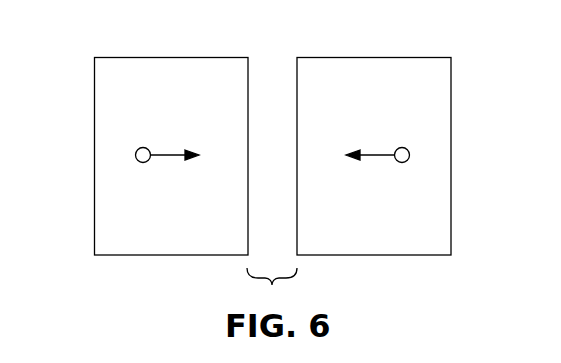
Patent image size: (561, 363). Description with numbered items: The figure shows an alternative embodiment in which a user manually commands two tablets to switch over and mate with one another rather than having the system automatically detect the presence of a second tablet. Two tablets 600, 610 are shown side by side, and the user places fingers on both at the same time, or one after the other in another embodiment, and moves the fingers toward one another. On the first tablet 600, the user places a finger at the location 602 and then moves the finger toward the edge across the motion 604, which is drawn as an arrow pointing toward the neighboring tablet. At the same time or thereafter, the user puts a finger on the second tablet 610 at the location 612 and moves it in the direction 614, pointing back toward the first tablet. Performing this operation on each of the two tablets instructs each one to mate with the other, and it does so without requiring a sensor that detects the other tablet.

The tablet 600 is at (118, 57).
The finger placement location 602 is at (136, 155).
The motion 604 is at (165, 158).
The tablet 610 is at (423, 57).
The finger location 612 is at (410, 155).
The direction 614 is at (380, 158).